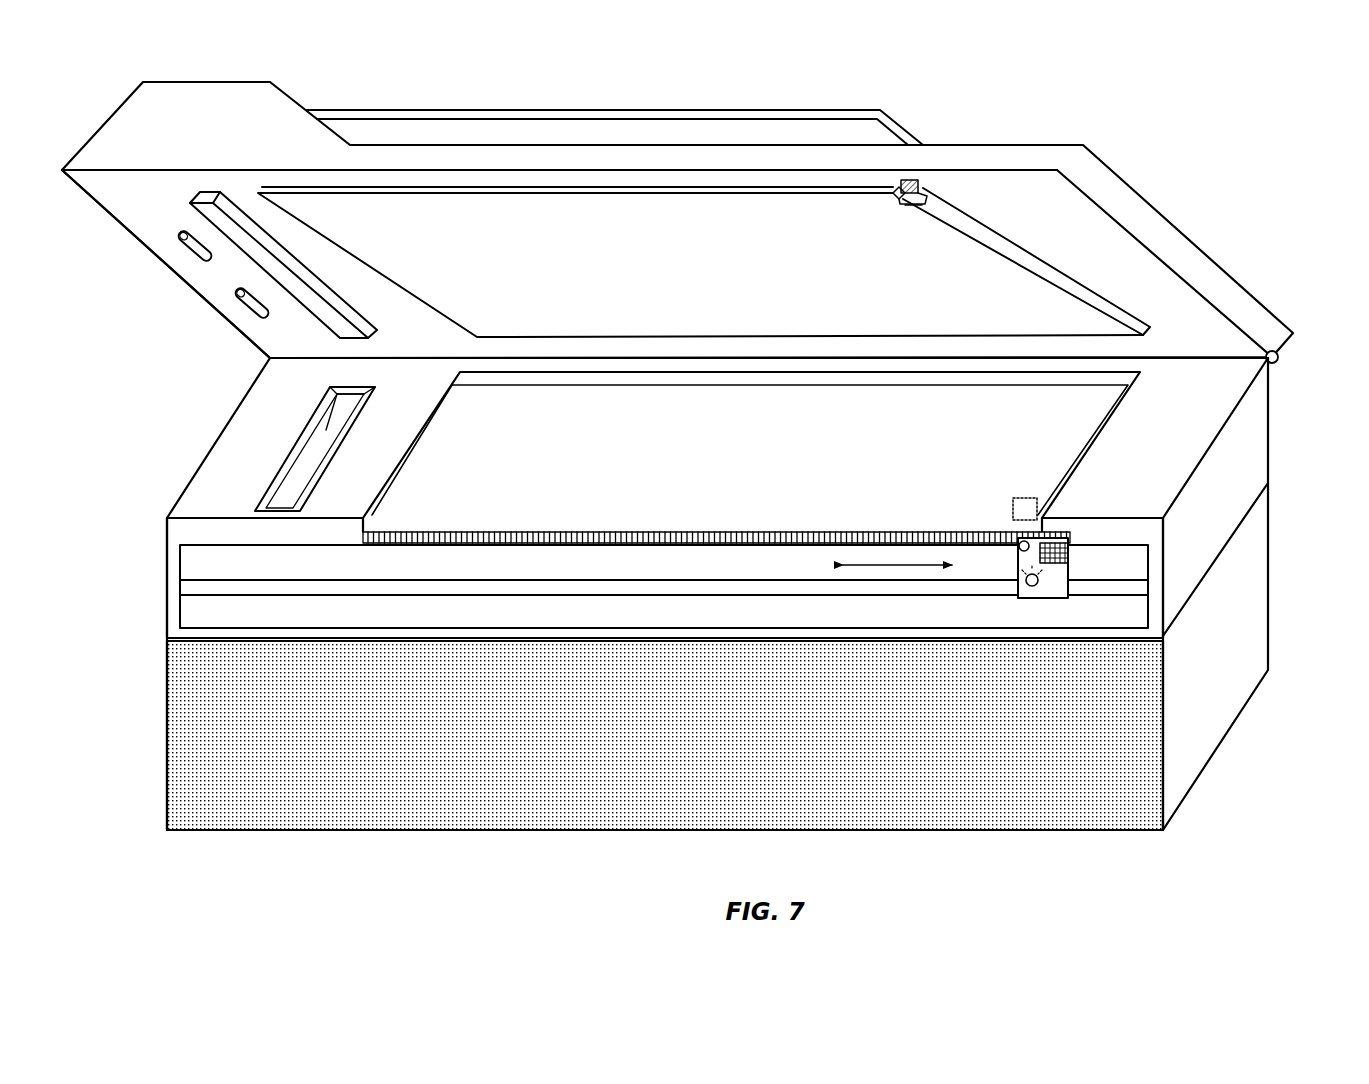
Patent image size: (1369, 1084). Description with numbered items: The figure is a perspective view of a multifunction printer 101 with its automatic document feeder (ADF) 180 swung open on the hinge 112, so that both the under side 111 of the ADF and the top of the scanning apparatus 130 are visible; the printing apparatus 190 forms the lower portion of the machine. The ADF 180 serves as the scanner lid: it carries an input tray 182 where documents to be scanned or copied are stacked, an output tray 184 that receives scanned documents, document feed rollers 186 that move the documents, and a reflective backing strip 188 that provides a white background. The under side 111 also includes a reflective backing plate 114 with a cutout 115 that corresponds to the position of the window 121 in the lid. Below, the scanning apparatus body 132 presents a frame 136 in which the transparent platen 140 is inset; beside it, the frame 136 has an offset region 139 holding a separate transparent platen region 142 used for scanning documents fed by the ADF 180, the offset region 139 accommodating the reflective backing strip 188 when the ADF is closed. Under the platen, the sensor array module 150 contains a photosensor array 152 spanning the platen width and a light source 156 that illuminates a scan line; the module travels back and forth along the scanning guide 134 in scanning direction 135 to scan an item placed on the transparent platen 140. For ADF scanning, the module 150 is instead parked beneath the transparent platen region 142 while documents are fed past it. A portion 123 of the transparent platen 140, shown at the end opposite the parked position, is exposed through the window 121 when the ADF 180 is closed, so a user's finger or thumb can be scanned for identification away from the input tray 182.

The multifunction printer 101 is at (1265, 148).
The under side 111 is at (122, 210).
The hinge 112 is at (1280, 356).
The reflective backing plate 114 is at (345, 205).
The cutout 115 is at (910, 206).
The window 121 is at (922, 180).
The portion of transparent platen 123 is at (1030, 500).
The scanning apparatus 130 is at (152, 510).
The scanning apparatus body 132 is at (163, 548).
The scanning guide 134 is at (196, 588).
The scanning direction 135 is at (900, 578).
The frame 136 is at (212, 487).
The offset region 139 is at (296, 452).
The transparent platen 140 is at (1055, 450).
The transparent platen region 142 is at (327, 405).
The sensor array module 150 is at (1052, 600).
The photosensor array 152 is at (1052, 566).
The light source 156 is at (1033, 598).
The automatic document feeder 180 is at (133, 110).
The input tray 182 is at (808, 110).
The output tray 184 is at (983, 136).
The document feed rollers 186 is at (238, 292).
The reflective backing strip 188 is at (215, 222).
The printing apparatus 190 is at (165, 804).